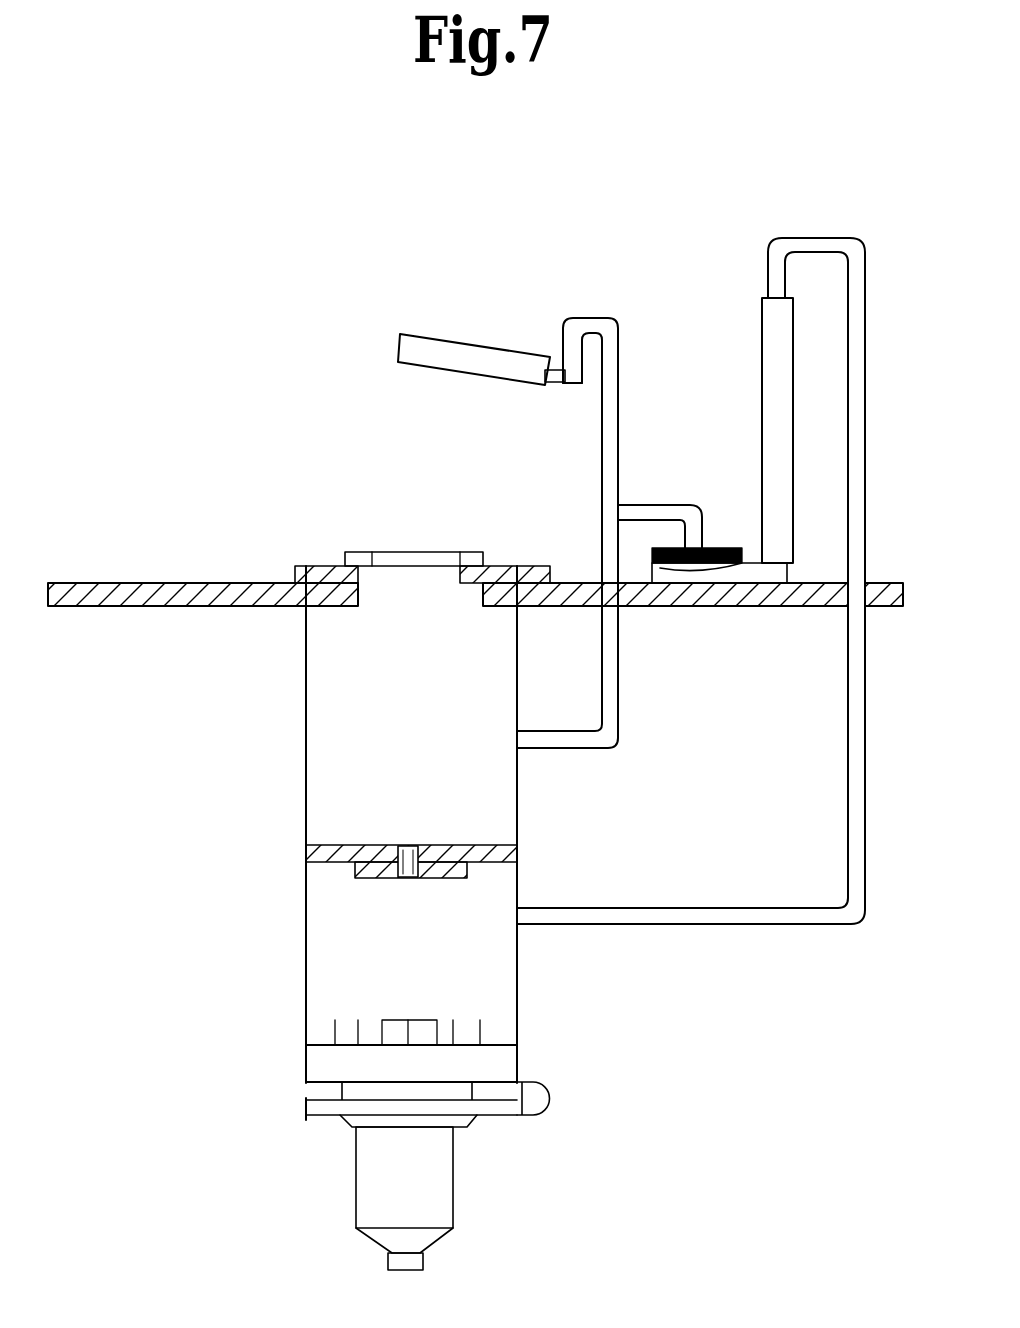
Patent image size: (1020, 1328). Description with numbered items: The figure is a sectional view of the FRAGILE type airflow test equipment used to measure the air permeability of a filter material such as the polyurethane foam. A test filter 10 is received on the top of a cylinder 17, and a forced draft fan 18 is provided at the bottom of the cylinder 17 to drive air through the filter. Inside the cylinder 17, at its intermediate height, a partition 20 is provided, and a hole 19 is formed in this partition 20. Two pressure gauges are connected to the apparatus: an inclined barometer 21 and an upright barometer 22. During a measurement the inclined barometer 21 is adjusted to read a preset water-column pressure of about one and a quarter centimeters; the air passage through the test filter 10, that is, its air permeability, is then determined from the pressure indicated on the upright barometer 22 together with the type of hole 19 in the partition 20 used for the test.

The test filter 10 is at (305, 566).
The cylinder 17 is at (303, 935).
The forced draft fan 18 is at (306, 1120).
The hole 19 is at (417, 880).
The partition 20 is at (340, 843).
The inclined barometer 21 is at (405, 367).
The upright barometer 22 is at (762, 302).